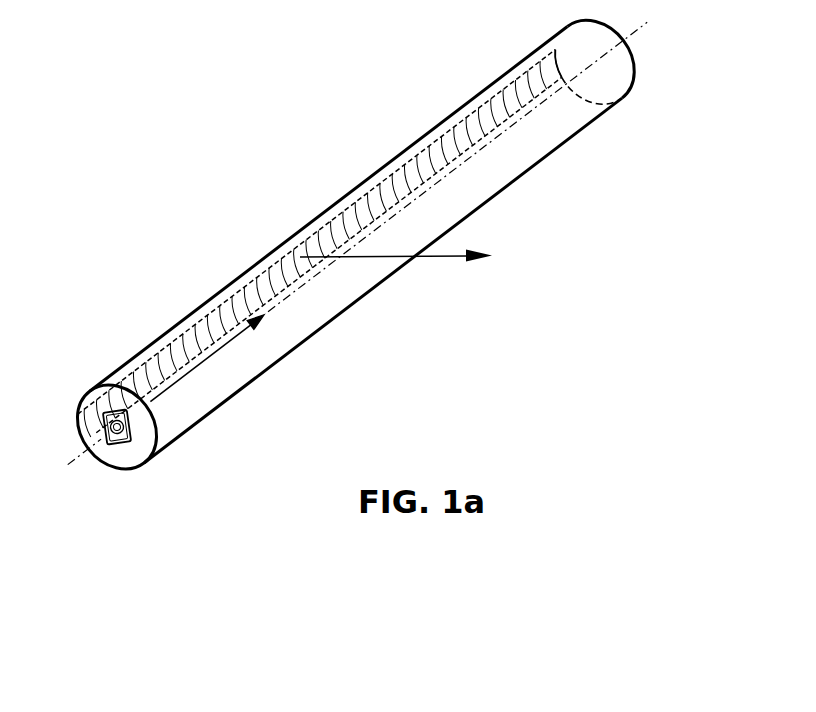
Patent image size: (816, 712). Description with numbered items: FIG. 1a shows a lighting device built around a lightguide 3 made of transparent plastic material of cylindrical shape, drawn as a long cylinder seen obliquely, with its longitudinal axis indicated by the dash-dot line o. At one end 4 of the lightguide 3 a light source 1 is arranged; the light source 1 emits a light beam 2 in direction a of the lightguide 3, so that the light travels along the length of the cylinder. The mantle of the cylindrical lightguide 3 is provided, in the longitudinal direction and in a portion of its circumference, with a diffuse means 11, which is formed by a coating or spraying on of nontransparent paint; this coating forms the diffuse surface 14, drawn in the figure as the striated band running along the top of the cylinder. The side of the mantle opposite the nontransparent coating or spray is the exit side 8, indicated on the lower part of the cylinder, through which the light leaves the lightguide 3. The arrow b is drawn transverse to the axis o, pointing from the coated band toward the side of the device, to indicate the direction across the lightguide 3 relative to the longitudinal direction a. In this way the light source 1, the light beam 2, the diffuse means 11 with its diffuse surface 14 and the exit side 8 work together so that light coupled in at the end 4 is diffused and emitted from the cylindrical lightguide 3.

The light source 1 is at (125, 488).
The light beam 2 is at (323, 243).
The lightguide 3 is at (355, 283).
The end 4 is at (110, 447).
The exit side 8 is at (383, 280).
The diffuse means 11 is at (117, 426).
The diffuse surface 14 is at (317, 232).
The longitudinal axis o is at (357, 243).
The direction of the lightguide a is at (207, 358).
The transverse direction b is at (411, 256).